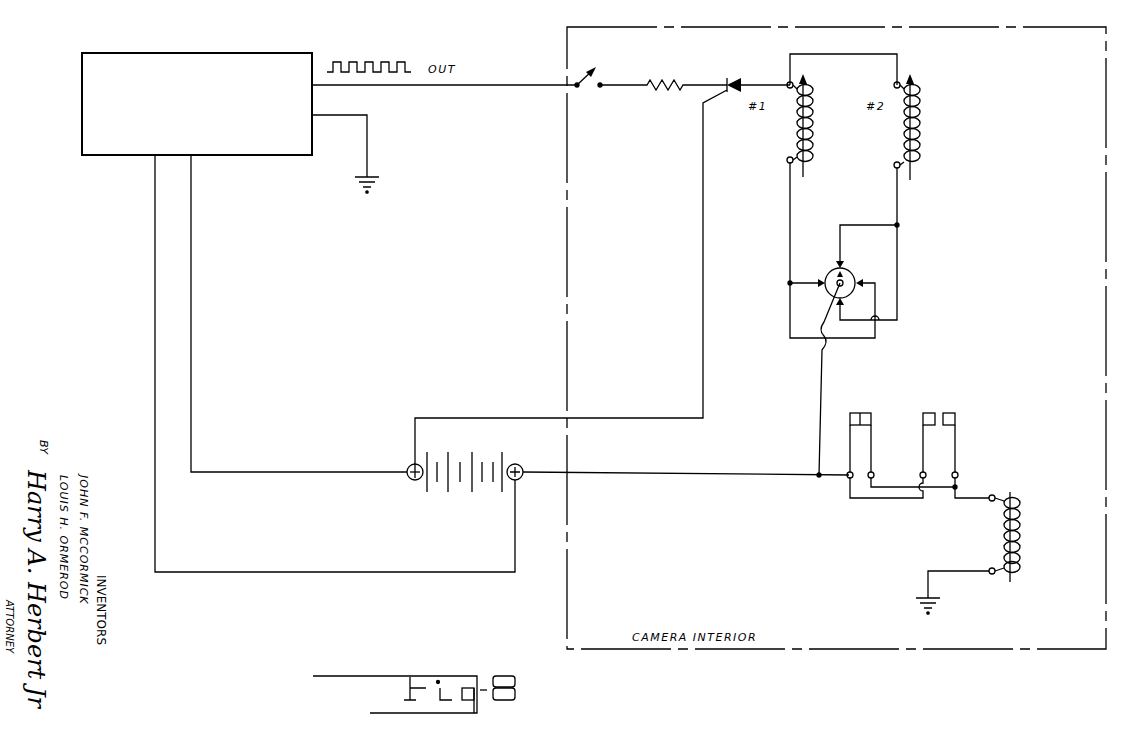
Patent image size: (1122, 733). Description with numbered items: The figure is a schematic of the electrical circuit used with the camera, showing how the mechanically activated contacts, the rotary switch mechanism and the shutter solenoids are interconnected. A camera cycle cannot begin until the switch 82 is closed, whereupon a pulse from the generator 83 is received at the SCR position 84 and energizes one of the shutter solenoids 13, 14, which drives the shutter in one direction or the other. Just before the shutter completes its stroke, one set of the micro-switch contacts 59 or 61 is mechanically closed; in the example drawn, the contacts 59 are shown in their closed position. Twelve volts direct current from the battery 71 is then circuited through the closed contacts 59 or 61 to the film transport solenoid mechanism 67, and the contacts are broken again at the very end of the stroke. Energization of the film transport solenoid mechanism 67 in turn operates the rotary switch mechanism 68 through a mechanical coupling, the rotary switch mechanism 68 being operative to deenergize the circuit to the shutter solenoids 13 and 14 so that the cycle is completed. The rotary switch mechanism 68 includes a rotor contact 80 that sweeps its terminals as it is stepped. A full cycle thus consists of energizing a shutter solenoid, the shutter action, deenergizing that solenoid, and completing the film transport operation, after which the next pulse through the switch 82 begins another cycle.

The generator 83 is at (212, 53).
The switch 82 is at (582, 70).
The SCR position 84 is at (744, 70).
The shutter solenoid 13 is at (786, 133).
The shutter solenoid 14 is at (926, 133).
The rotary switch mechanism 68 is at (824, 270).
The wiper contact 80 is at (827, 295).
The battery 71 is at (470, 452).
The micro-switch contacts 59 is at (860, 411).
The micro-switch contacts 61 is at (940, 411).
The film transport solenoid mechanism 67 is at (1030, 528).